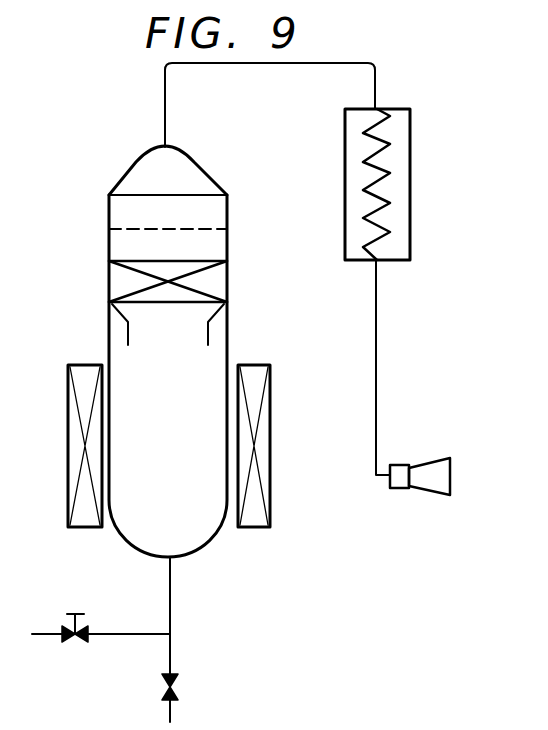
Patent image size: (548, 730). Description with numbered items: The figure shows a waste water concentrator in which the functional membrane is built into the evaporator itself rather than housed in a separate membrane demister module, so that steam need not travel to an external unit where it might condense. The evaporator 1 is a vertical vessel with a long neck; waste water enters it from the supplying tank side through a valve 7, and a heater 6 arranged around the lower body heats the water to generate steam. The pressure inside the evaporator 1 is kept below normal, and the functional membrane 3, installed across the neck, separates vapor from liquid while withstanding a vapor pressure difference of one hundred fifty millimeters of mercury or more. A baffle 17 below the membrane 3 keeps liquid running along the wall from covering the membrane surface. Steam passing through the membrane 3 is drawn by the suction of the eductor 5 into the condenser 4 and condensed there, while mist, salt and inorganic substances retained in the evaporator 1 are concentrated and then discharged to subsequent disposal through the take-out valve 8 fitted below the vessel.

The evaporator 1 is at (228, 334).
The functional membrane 3 is at (136, 228).
The condenser 4 is at (410, 158).
The eductor 5 is at (432, 462).
The heater 6 is at (270, 428).
The valve 7 is at (84, 643).
The take-out valve 8 is at (178, 684).
The inner tube 17 is at (128, 335).